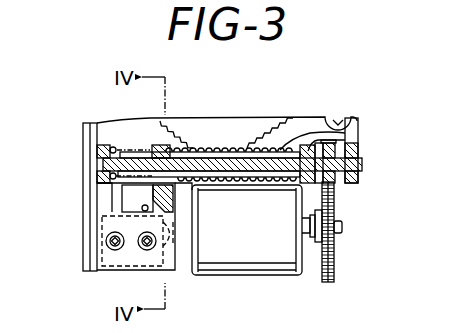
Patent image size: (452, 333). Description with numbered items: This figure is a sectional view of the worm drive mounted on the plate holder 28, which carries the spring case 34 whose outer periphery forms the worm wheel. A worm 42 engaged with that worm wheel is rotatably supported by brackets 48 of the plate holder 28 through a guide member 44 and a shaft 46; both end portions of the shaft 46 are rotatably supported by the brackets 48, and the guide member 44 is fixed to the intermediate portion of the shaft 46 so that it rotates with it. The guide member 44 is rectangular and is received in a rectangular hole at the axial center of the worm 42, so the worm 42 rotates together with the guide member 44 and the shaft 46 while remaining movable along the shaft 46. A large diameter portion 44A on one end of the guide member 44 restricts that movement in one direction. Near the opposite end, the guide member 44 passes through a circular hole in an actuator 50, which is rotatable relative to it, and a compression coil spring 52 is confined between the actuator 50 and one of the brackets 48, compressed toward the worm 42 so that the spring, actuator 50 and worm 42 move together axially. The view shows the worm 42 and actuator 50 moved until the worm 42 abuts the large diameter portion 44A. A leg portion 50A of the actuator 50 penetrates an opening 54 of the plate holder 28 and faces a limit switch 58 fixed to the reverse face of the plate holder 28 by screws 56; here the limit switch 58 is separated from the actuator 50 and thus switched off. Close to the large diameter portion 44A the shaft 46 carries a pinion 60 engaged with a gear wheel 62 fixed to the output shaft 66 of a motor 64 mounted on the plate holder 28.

The plate holder 28 is at (89, 122).
The spring case 34 is at (260, 122).
The worm 42 is at (222, 148).
The guide member 44 is at (301, 150).
The large diameter portion 44A is at (358, 127).
The shaft 46 is at (292, 150).
The brackets 48 is at (108, 158).
The actuator 50 is at (172, 147).
The leg portion 50A is at (145, 190).
The compression coil spring 52 is at (118, 146).
The opening 54 is at (122, 192).
The screws 56 is at (106, 236).
The limit switch 58 is at (100, 274).
The pinion 60 is at (336, 143).
The gear wheel 62 is at (334, 265).
The motor 64 is at (260, 256).
The output shaft 66 is at (343, 227).